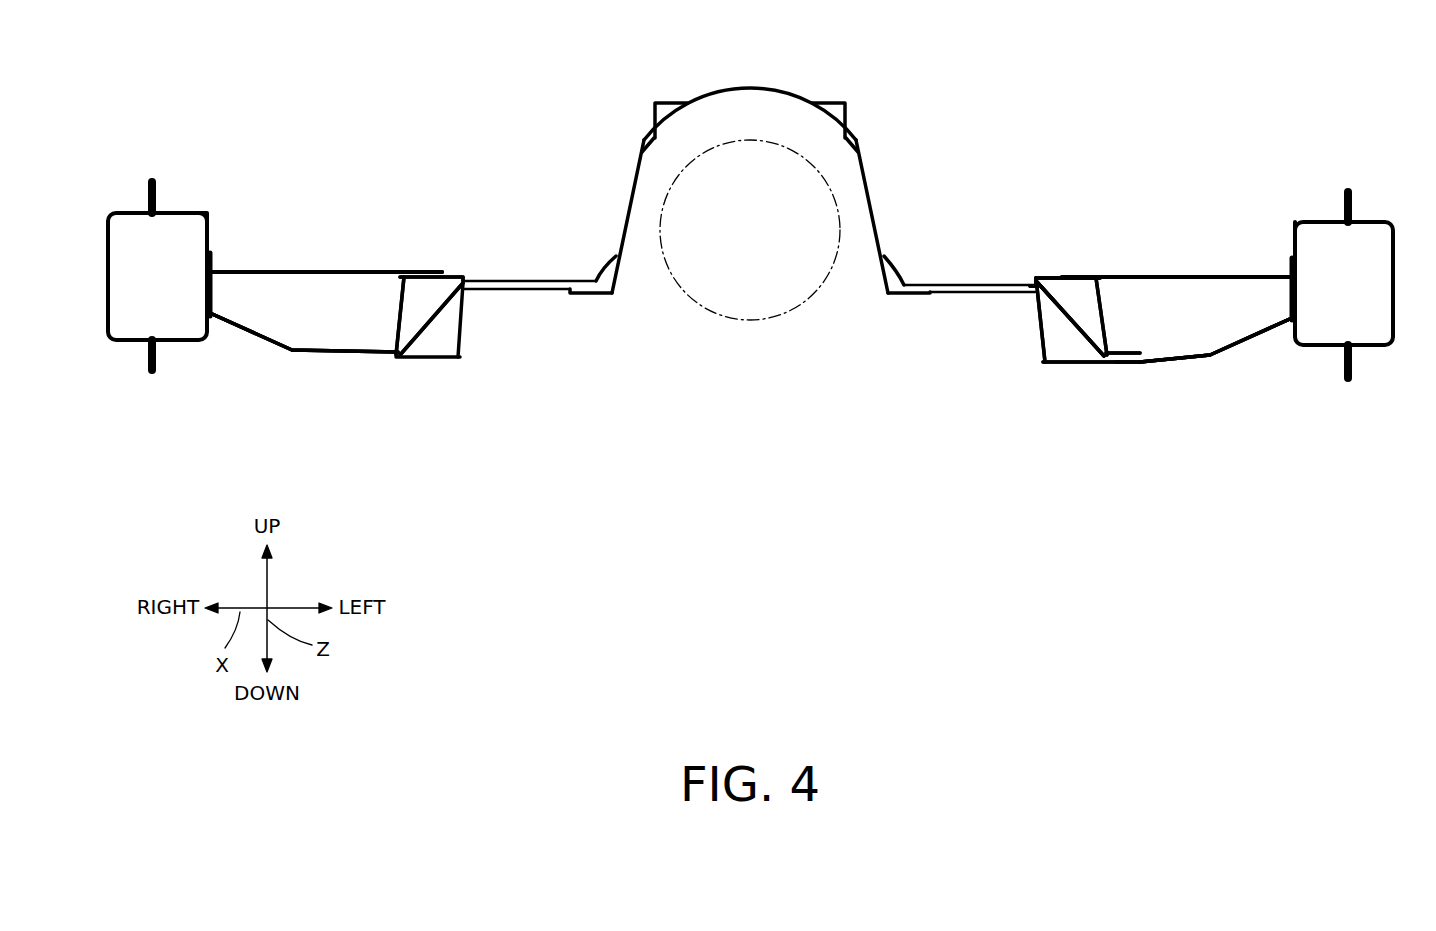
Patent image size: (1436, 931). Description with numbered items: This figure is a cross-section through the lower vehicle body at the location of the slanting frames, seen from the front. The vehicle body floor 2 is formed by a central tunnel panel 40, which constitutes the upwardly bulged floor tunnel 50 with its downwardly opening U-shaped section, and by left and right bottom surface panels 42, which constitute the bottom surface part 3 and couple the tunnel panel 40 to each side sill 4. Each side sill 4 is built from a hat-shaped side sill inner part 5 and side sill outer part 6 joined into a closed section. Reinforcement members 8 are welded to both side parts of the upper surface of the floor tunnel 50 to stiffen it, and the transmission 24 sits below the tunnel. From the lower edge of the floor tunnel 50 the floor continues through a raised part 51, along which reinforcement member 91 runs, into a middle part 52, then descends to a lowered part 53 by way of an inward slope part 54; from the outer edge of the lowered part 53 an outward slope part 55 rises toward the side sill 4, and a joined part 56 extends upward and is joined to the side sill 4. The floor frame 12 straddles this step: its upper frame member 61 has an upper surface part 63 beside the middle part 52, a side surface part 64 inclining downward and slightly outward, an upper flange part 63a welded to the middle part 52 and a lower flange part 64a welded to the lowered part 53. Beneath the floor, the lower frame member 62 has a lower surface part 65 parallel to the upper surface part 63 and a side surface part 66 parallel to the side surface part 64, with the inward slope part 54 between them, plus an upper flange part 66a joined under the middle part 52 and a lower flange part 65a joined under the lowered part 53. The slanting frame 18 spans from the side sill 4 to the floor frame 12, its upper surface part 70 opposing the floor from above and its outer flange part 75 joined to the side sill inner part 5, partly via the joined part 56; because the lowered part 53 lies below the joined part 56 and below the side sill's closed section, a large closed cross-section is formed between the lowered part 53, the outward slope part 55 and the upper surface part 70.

The vehicle body floor 2 is at (1205, 369).
The bottom surface part 3 is at (539, 301).
The side sill 4 is at (130, 132).
The side sill inner part 5 is at (192, 212).
The side sill outer part 6 is at (128, 212).
The reinforcement member 8 is at (674, 100).
The floor frame 12 is at (415, 366).
The slanting frame 18 is at (318, 262).
The transmission 24 is at (750, 322).
The tunnel panel 40 is at (868, 157).
The bottom surface panel 42 is at (288, 356).
The floor tunnel 50 is at (750, 86).
The raised part 51 is at (606, 258).
The middle part 52 is at (525, 279).
The lowered part 53 is at (332, 353).
The inward slope part 54 is at (442, 318).
The outward slope part 55 is at (240, 332).
The joined part 56 is at (214, 298).
The upper frame member 61 is at (456, 275).
The lower frame member 62 is at (445, 362).
The upper surface part 63 is at (1065, 277).
The upper flange part 63a is at (1035, 277).
The side surface part 64 is at (1108, 310).
The lower flange part 64a is at (1113, 345).
The lower surface part 65 is at (1070, 365).
The lower flange part 65a is at (1122, 365).
The side surface part 66 is at (1060, 318).
The upper flange part 66a is at (1035, 300).
The upper surface part 70 is at (362, 268).
The outer flange part 75 is at (212, 262).
The reinforcement member 91 is at (620, 292).